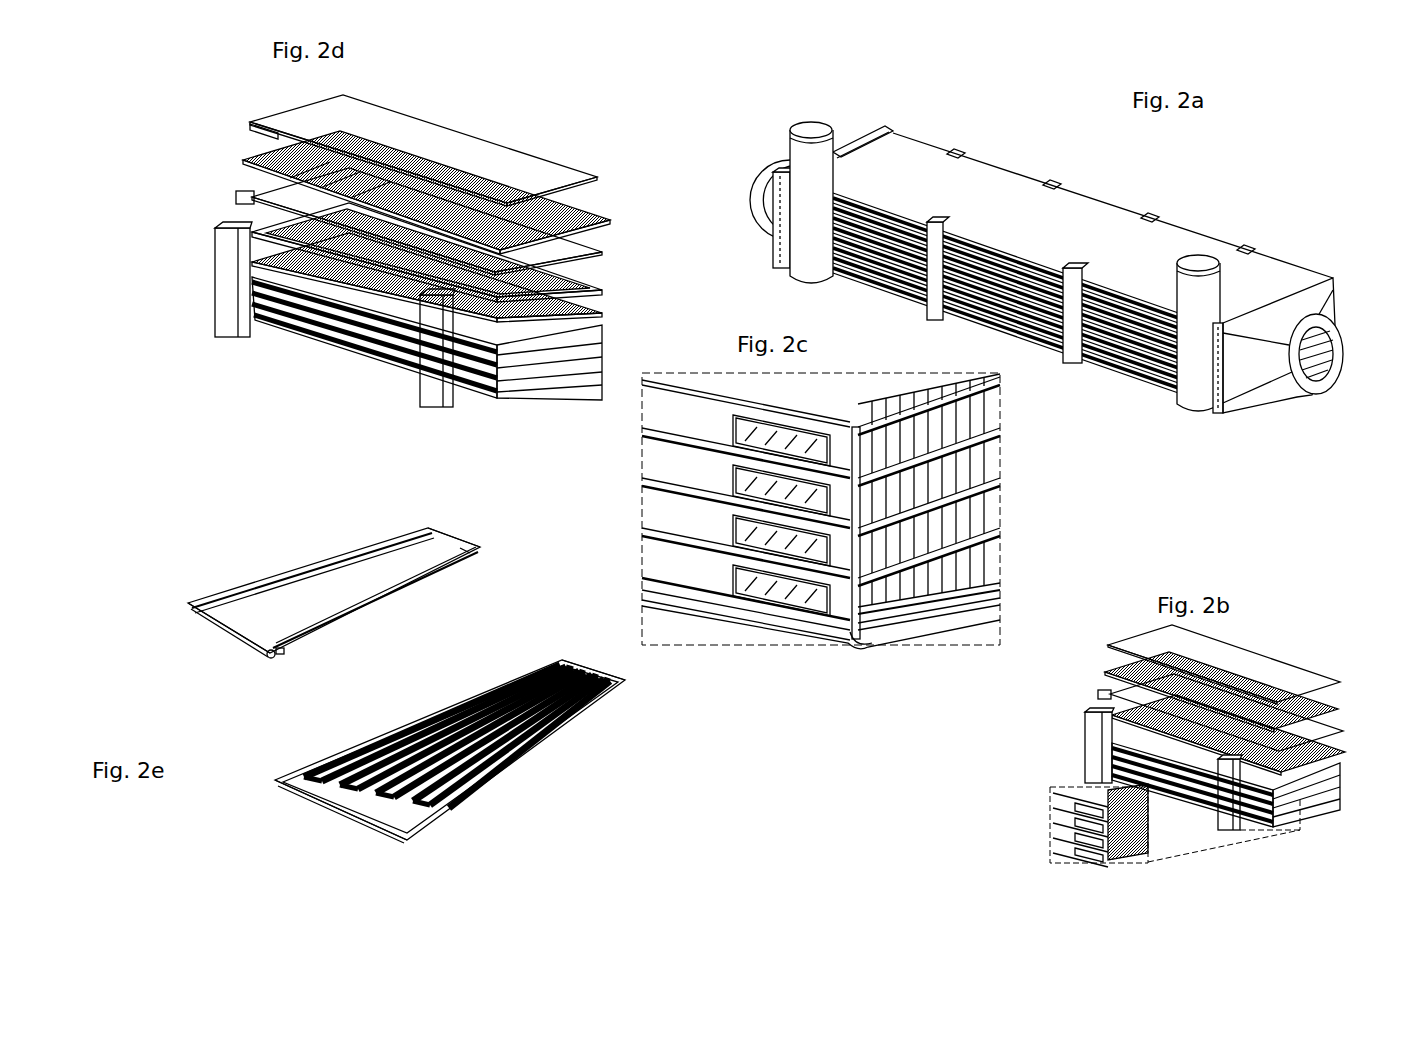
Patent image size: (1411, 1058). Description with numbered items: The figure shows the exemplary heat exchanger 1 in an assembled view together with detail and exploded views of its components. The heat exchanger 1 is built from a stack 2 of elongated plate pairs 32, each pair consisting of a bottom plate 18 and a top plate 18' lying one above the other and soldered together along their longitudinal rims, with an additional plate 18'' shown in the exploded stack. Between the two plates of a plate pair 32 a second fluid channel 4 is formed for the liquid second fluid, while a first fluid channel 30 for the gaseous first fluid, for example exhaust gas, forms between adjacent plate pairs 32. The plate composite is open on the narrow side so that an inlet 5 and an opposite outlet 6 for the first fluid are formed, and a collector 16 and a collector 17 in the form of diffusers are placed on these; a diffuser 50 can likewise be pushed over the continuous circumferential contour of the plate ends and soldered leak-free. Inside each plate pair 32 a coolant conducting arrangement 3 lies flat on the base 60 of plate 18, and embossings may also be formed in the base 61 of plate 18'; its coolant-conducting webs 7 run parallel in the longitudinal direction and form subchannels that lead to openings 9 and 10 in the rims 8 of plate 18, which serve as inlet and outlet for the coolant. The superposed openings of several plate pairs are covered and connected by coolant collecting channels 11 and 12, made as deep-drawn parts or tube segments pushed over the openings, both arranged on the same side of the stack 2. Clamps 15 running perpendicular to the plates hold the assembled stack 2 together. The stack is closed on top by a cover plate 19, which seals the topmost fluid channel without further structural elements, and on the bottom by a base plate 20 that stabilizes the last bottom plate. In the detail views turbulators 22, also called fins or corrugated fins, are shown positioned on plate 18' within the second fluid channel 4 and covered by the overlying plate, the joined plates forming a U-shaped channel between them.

In FIG. 2A, the heat exchanger 1 is at (1116, 201).
In FIG. 2A, the stack 2 is at (860, 268).
In FIG. 2D, the coolant conducting arrangement 3 is at (287, 150).
In FIG. 2C, the coolant conducting arrangement 3 is at (757, 603).
In FIG. 2E, the coolant conducting arrangement 3 is at (574, 738).
In FIG. 2D, the second fluid channel 4 is at (577, 287).
In FIG. 2C, the second fluid channel 4 is at (998, 537).
In FIG. 2E, the second fluid channel 4 is at (513, 757).
In FIG. 2A, the inlet 5 is at (763, 190).
In FIG. 2A, the outlet 6 is at (1332, 368).
In FIG. 2C, the outlet 6 is at (1020, 494).
In FIG. 2E, the coolant-conducting webs 7 is at (473, 793).
In FIG. 2C, the rim 8 is at (707, 560).
In FIG. 2E, the rim 8 is at (347, 550).
In FIG. 2E, the opening 9 is at (283, 653).
In FIG. 2C, the opening 10 is at (793, 607).
In FIG. 2E, the opening 10 is at (460, 553).
In FIG. 2A, the coolant collecting channel 11 is at (832, 128).
In FIG. 2A, the coolant collecting channel 12 is at (1190, 404).
In FIG. 2A, the clamps 15 is at (1070, 340).
In FIG. 2A, the collector 16 is at (773, 250).
In FIG. 2A, the collector 17 is at (1250, 392).
In FIG. 2D, the plate 18 is at (441, 319).
In FIG. 2A, the plate 18 is at (1023, 322).
In FIG. 2C, the plate 18 is at (705, 529).
In FIG. 2E, the plate 18 is at (475, 750).
In FIG. 2B, the plate 18 is at (1229, 776).
In FIG. 2D, the plate 18' is at (388, 287).
In FIG. 2C, the plate 18' is at (957, 483).
In FIG. 2E, the plate 18' is at (326, 573).
In FIG. 2B, the plate 18' is at (1241, 727).
In FIG. 2D, the fin plate 18'' is at (405, 192).
In FIG. 2D, the cover plate 19 is at (517, 157).
In FIG. 2A, the cover plate 19 is at (1004, 170).
In FIG. 2C, the cover plate 19 is at (740, 383).
In FIG. 2C, the base plate 20 is at (840, 645).
In FIG. 2C, the turbulators 22 is at (998, 577).
In FIG. 2D, the first fluid channel 30 is at (602, 313).
In FIG. 2C, the first fluid channel 30 is at (960, 597).
In FIG. 2E, the first fluid channel 30 is at (243, 650).
In FIG. 2D, the plate pairs 32 is at (392, 360).
In FIG. 2C, the plate pairs 32 is at (912, 654).
In FIG. 2E, the plate pairs 32 is at (457, 540).
In FIG. 2A, the diffuser 50 is at (1300, 296).
In FIG. 2E, the base 60 is at (350, 805).
In FIG. 2E, the base 61 is at (198, 618).